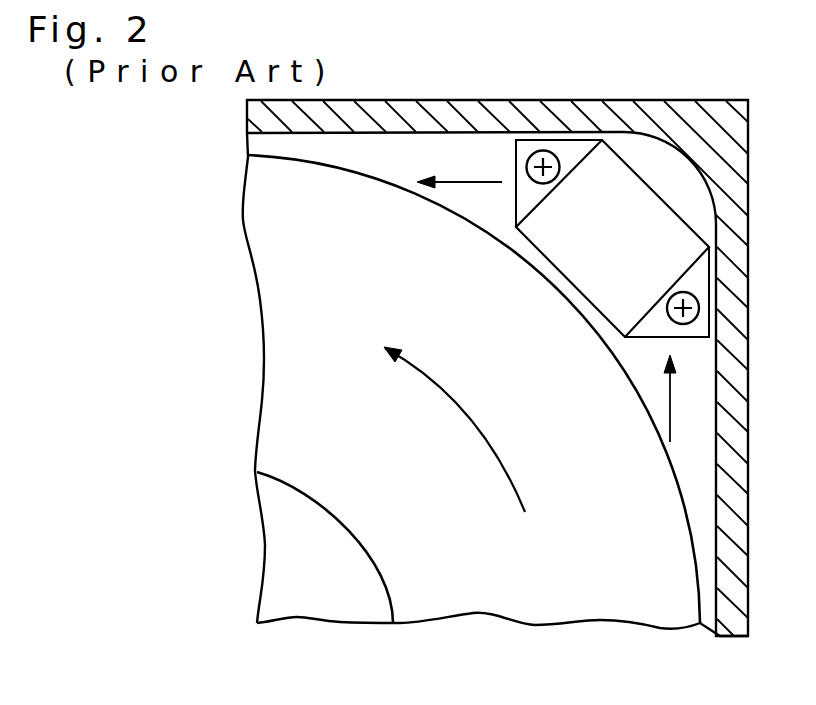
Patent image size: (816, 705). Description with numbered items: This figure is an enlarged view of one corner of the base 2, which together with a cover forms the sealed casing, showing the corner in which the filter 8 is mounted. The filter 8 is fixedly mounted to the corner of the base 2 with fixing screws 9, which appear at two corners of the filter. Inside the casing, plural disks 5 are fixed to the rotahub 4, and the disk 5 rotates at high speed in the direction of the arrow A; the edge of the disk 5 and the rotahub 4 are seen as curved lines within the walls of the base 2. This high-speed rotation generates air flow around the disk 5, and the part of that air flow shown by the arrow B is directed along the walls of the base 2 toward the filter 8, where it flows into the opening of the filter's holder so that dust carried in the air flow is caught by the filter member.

The base 2 is at (381, 145).
The rotahub 4 is at (322, 605).
The disk 5 is at (530, 603).
The filter 8 is at (646, 184).
The fixing screws 9 is at (554, 150).
The arrow indicating disk rotation direction A is at (470, 417).
The arrow indicating air flow B is at (468, 182).